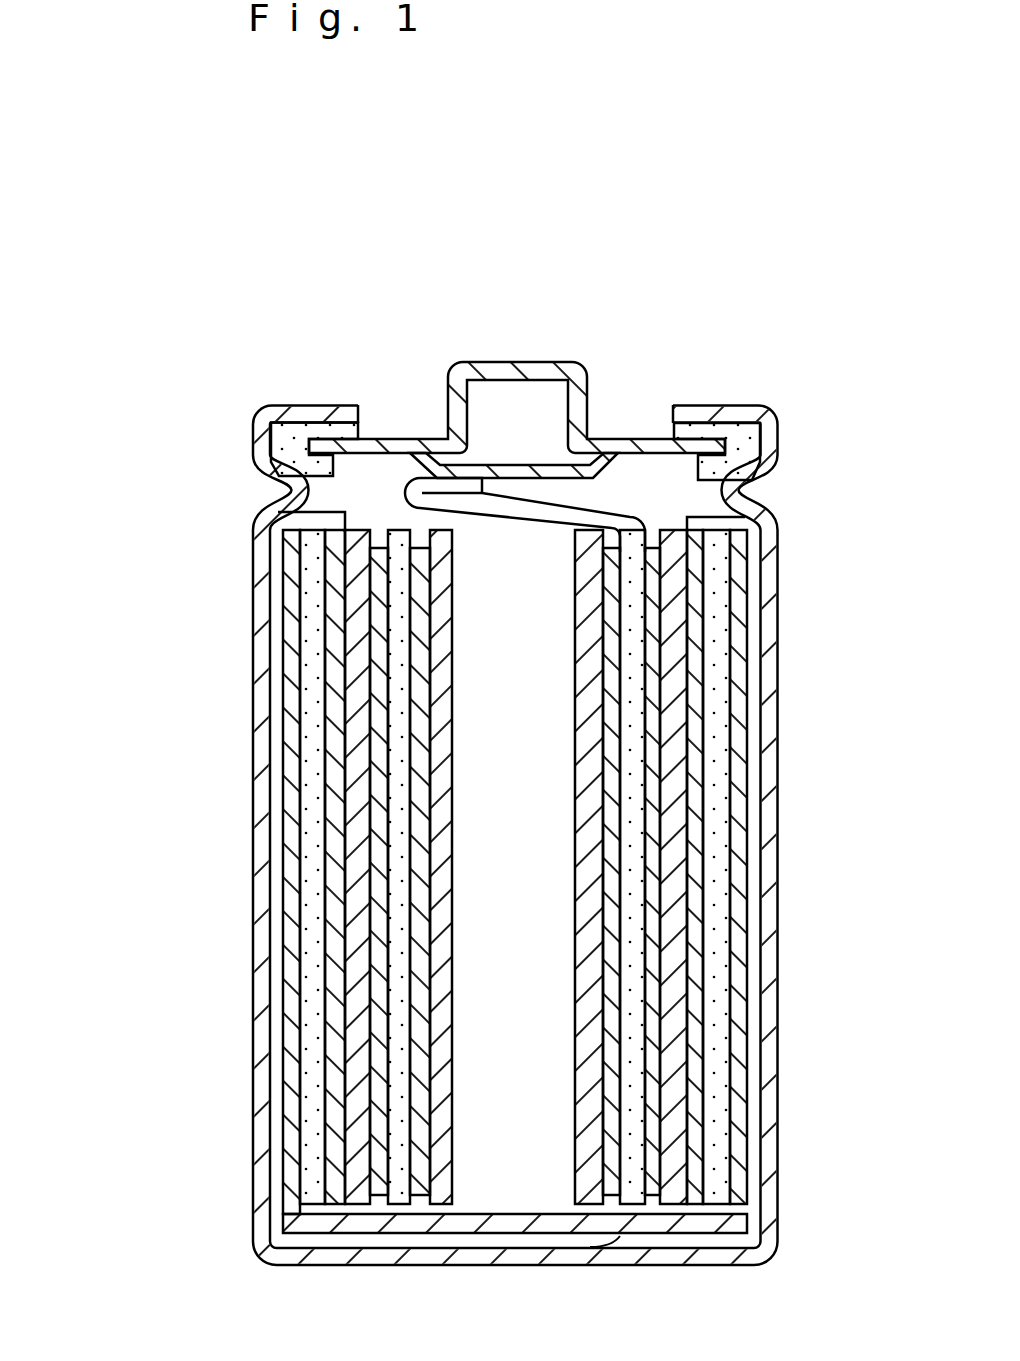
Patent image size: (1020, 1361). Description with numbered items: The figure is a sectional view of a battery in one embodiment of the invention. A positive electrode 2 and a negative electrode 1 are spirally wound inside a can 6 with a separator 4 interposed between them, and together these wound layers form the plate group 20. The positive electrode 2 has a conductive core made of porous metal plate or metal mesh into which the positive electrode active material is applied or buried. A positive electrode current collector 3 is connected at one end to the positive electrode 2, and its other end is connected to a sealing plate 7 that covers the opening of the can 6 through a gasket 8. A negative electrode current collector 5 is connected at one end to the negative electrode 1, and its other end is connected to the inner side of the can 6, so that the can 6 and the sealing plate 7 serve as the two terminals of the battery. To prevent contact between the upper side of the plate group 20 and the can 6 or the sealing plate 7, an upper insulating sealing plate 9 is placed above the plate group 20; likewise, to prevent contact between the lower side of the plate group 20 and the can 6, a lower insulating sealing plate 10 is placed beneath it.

The negative electrode 1 is at (358, 627).
The positive electrode 2 is at (313, 752).
The positive electrode current collector 3 is at (617, 510).
The separator 4 is at (378, 588).
The negative electrode current collector 5 is at (283, 1100).
The can 6 is at (258, 836).
The sealing plate 7 is at (443, 433).
The gasket 8 is at (750, 440).
The upper insulating sealing plate 9 is at (735, 528).
The lower insulating sealing plate 10 is at (680, 1234).
The plate group 20 is at (392, 866).